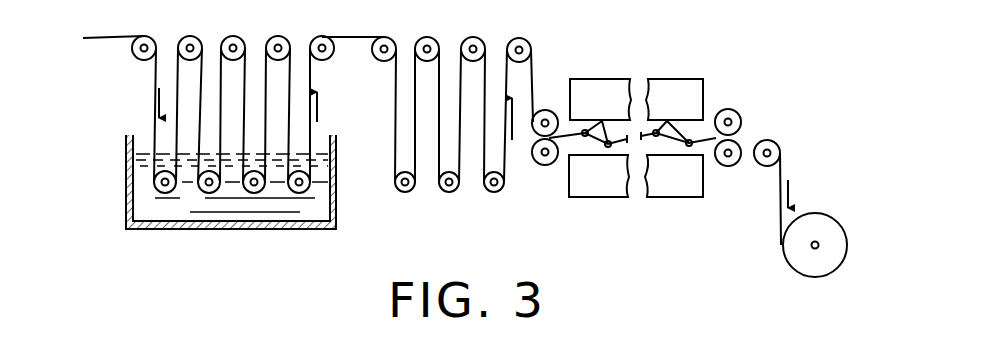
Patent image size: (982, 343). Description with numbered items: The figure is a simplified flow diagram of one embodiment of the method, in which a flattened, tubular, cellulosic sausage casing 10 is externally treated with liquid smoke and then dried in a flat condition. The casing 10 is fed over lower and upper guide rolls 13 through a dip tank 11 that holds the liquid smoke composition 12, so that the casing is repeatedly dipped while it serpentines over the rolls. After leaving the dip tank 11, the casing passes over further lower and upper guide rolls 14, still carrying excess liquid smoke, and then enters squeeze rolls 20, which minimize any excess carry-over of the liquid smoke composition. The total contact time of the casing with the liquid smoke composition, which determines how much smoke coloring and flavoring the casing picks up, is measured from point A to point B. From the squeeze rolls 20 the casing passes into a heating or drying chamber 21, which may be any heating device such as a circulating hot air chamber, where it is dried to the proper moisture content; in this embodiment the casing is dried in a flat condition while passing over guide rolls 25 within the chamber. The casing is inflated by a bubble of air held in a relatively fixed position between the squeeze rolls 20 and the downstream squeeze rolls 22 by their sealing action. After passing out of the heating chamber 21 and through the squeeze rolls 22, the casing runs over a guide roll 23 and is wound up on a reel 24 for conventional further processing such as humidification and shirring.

The flattened tubular cellulosic sausage casing 10 is at (152, 82).
The point A is at (147, 135).
The point B is at (552, 108).
The dip tank 11 is at (181, 229).
The liquid smoke composition 12 is at (280, 207).
The lower and upper guide rolls 13 is at (133, 52).
The lower and upper guide rolls 14 is at (388, 44).
The squeeze rolls 20 is at (534, 150).
The heating or drying chamber 21 is at (648, 98).
The squeeze rolls 22 is at (733, 112).
The guide roll 23 is at (781, 150).
The reel 24 is at (795, 258).
The guide rolls 25 is at (637, 120).